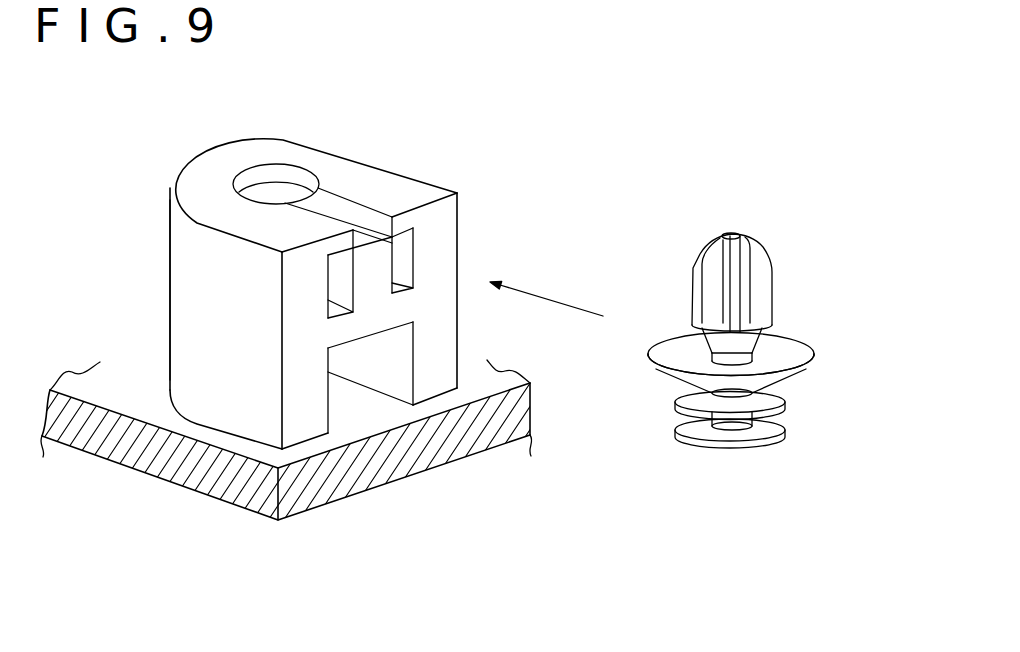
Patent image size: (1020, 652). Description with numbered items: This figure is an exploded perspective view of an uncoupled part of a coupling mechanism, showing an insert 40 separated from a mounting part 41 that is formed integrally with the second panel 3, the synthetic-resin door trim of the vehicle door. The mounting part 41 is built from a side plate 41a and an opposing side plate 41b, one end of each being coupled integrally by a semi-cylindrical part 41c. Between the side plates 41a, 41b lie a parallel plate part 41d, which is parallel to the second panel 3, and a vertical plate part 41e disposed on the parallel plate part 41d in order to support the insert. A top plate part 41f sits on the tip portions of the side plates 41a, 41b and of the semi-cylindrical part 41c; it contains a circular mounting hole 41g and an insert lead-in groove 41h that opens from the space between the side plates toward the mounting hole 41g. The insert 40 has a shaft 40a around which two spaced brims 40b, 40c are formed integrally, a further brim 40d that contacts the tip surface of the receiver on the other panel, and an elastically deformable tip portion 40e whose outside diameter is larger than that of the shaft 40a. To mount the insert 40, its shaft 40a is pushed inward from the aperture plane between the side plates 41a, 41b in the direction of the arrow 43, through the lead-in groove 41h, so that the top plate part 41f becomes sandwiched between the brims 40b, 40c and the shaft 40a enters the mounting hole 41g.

The second panel 3 is at (483, 445).
The insert 40 is at (736, 350).
The shaft 40a is at (731, 430).
The brim 40b is at (763, 446).
The brim 40c is at (788, 412).
The brim 40d is at (807, 352).
The tip portion 40e is at (760, 262).
The mounting part 41 is at (300, 302).
The side plate 41a is at (250, 393).
The side plate 41b is at (443, 345).
The semi-cylindrical part 41c is at (170, 286).
The parallel plate part 41d is at (362, 328).
The vertical plate part 41e is at (385, 266).
The top plate part 41f is at (290, 152).
The mounting hole 41g is at (243, 178).
The insert lead-in groove 41h is at (351, 207).
The arrow 43 is at (553, 297).